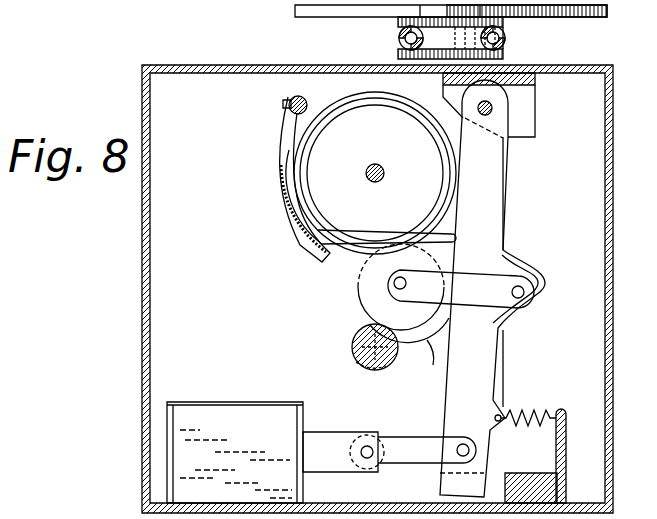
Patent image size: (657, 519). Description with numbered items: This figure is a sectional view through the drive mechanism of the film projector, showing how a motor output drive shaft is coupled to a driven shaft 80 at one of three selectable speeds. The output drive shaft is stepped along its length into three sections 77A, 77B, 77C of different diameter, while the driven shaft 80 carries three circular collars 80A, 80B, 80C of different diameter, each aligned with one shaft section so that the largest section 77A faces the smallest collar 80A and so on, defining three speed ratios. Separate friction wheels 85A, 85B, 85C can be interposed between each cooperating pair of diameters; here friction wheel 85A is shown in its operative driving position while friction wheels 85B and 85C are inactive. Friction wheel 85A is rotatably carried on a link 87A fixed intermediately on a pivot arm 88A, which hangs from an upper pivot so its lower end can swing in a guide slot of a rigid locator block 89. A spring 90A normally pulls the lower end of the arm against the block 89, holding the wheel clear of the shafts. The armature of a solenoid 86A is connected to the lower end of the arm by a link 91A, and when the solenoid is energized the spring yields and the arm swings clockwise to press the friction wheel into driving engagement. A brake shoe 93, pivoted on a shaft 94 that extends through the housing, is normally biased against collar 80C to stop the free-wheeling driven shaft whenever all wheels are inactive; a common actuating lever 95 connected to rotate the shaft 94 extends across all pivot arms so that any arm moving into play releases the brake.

The driven shaft 80 is at (386, 178).
The collar 80A is at (368, 148).
The collar 80B is at (403, 113).
The collar 80C is at (362, 95).
The shaft 94 is at (306, 101).
The common actuating lever 95 is at (338, 215).
The brake shoe 93 is at (276, 206).
The pivot arm 88A is at (487, 218).
The link 87A is at (470, 305).
The friction wheel 85A is at (358, 288).
The friction wheel 85B is at (417, 350).
The friction wheel 85C is at (432, 356).
The output drive shaft section 77A is at (355, 340).
The output drive shaft section 77B is at (370, 350).
The output drive shaft section 77C is at (366, 368).
The spring 90A is at (541, 412).
The rigid locator block 89 is at (526, 478).
The solenoid 86A is at (255, 443).
The link 91A is at (413, 466).